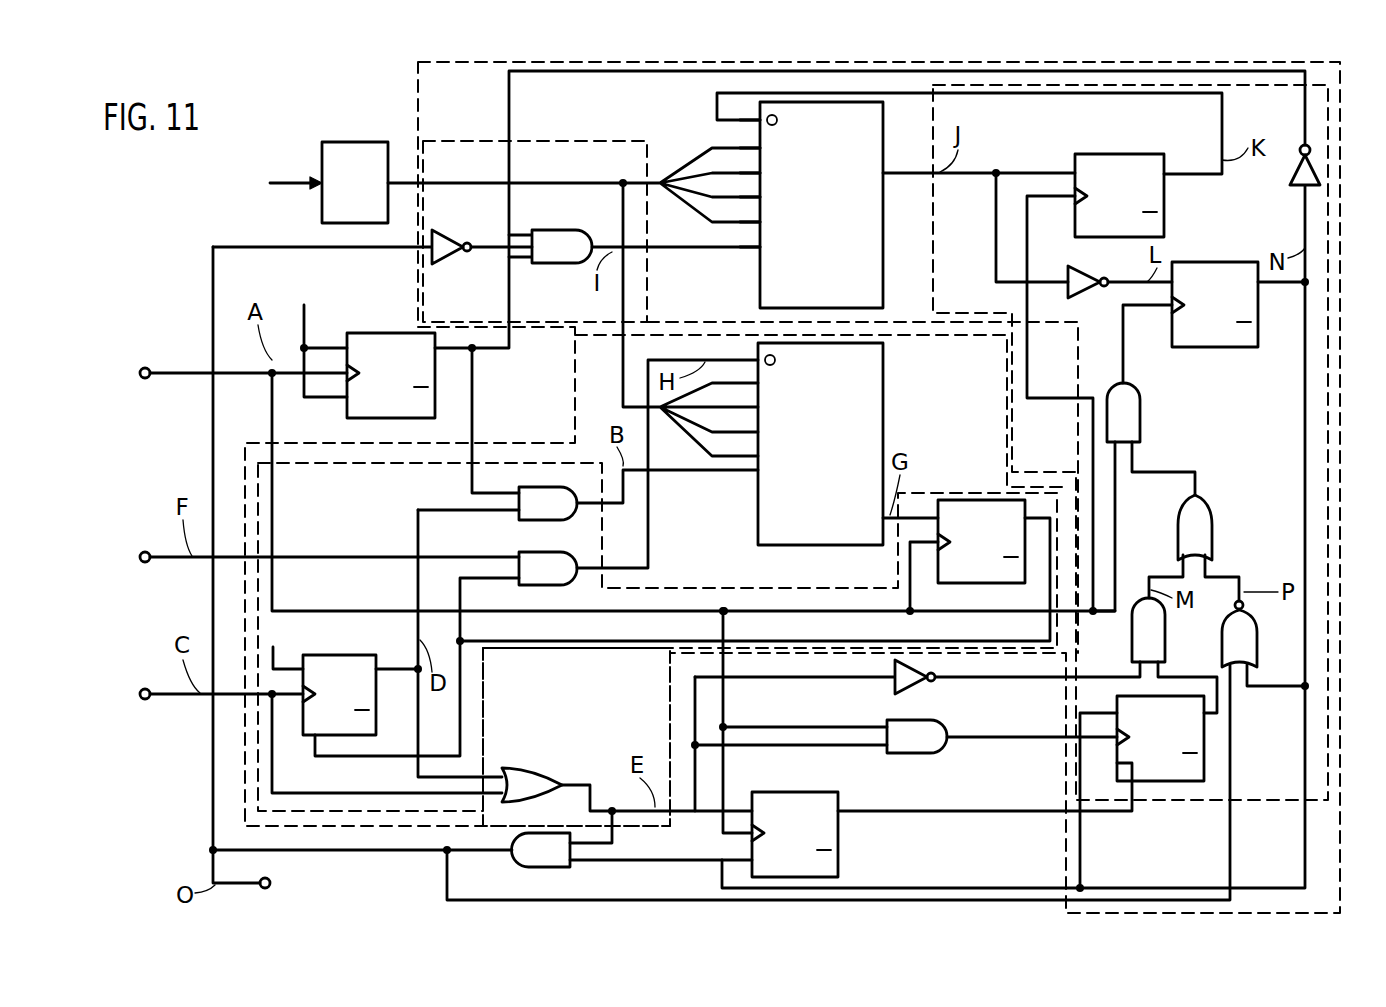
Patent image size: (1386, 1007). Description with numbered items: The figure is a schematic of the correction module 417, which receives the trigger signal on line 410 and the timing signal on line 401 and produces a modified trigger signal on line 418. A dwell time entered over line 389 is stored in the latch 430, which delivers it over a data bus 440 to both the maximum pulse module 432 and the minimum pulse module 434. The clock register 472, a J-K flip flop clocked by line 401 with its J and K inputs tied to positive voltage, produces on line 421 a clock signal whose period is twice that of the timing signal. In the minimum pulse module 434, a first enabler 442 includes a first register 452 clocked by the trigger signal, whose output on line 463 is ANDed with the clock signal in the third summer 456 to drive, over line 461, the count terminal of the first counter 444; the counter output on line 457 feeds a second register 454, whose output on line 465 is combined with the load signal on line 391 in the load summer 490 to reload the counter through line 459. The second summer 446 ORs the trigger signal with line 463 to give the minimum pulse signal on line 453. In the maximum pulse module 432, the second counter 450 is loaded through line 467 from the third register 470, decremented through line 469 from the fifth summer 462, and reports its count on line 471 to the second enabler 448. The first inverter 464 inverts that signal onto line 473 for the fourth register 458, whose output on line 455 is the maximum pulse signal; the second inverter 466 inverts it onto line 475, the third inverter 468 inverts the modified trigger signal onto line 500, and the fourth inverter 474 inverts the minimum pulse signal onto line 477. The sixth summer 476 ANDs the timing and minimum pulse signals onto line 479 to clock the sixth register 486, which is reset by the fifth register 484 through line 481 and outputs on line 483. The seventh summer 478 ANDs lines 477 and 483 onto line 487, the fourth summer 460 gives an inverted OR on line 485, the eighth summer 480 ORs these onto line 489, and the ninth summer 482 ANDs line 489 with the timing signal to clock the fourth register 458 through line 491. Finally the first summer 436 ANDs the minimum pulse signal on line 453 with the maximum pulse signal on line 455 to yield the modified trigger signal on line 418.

The line 389 is at (284, 182).
The correction module 417 is at (402, 100).
The latch 430 is at (355, 142).
The data bus 440 is at (402, 183).
The third inverter 468 is at (452, 232).
The line 500 is at (487, 251).
The fifth summer 462 is at (545, 230).
The maximum pulse module 432 is at (544, 104).
The line 467 is at (748, 88).
The second counter 450 is at (884, 148).
The line 469 is at (665, 250).
The line 471 is at (1022, 172).
The third register 470 is at (1105, 153).
The line 475 is at (1243, 78).
The second inverter 466 is at (1294, 168).
The second enabler 448 is at (1189, 225).
The fourth register 458 is at (1240, 261).
The line 473 is at (1135, 278).
The first inverter 464 is at (1090, 288).
The clock register 472 is at (390, 333).
The line 421 is at (493, 352).
The line 401 is at (178, 376).
The line 459 is at (662, 358).
The first counter 444 is at (885, 350).
The third summer 456 is at (560, 486).
The first enabler 442 is at (317, 516).
The line 461 is at (722, 472).
The second register 454 is at (978, 499).
The line 457 is at (912, 516).
The line 491 is at (1124, 345).
The ninth summer 482 is at (1141, 420).
The line 489 is at (1198, 490).
The eighth summer 480 is at (1213, 548).
The first register 452 is at (340, 654).
The load summer 490 is at (552, 612).
The line 465 is at (572, 647).
The line 487 is at (1149, 575).
The line 485 is at (1242, 586).
The seventh summer 478 is at (1132, 616).
The fourth summer 460 is at (1222, 632).
The line 391 is at (178, 559).
The line 410 is at (178, 697).
The minimum pulse module 434 is at (527, 701).
The line 463 is at (468, 775).
The second summer 446 is at (545, 769).
The fourth inverter 474 is at (893, 683).
The sixth summer 476 is at (946, 725).
The line 477 is at (1005, 680).
The line 479 is at (1035, 742).
The line 483 is at (1222, 700).
The fifth register 484 is at (840, 835).
The sixth register 486 is at (1162, 782).
The line 481 is at (1118, 814).
The first summer 436 is at (545, 867).
The line 453 is at (622, 861).
The line 455 is at (648, 859).
The line 418 is at (383, 855).